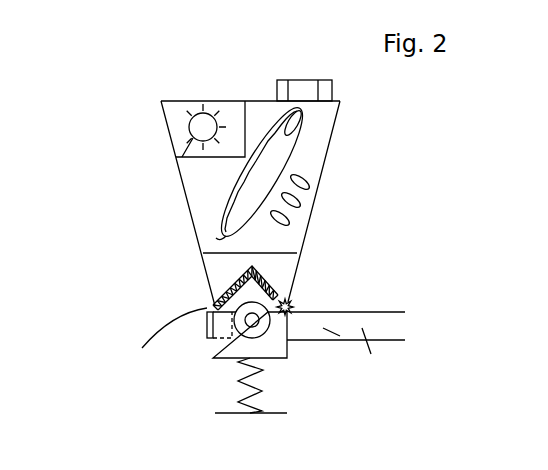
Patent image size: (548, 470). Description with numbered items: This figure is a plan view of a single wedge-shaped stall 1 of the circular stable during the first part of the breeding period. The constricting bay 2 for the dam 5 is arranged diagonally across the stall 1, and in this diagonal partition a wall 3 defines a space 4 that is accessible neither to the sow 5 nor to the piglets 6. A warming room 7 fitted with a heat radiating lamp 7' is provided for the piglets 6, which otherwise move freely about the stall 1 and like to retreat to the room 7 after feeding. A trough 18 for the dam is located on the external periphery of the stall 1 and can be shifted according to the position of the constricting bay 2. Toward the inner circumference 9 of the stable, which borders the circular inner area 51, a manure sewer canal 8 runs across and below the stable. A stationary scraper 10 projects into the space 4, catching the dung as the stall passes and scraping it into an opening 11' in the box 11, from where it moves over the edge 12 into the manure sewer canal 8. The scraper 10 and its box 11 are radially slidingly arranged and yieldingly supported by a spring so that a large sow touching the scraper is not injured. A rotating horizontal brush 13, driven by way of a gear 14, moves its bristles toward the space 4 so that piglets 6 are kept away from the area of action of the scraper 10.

The stall 1 is at (323, 170).
The constricting bay 2 is at (262, 130).
The wall 3 is at (297, 253).
The space 4 is at (217, 263).
The dam 5 is at (278, 143).
The piglets 6 is at (308, 197).
The warming room 7 is at (162, 139).
The heat radiating lamp 7' is at (151, 127).
The manure sewer canal 8 is at (296, 310).
The inner circumference 9 is at (185, 315).
The stationary scraper 10 is at (228, 302).
The box 11 is at (218, 369).
The opening 11' is at (157, 347).
The edge 12 is at (292, 312).
The rotating horizontal brush 13 is at (268, 287).
The gear 14 is at (293, 305).
The trough 18 is at (302, 90).
The circular inner area 51 is at (160, 343).